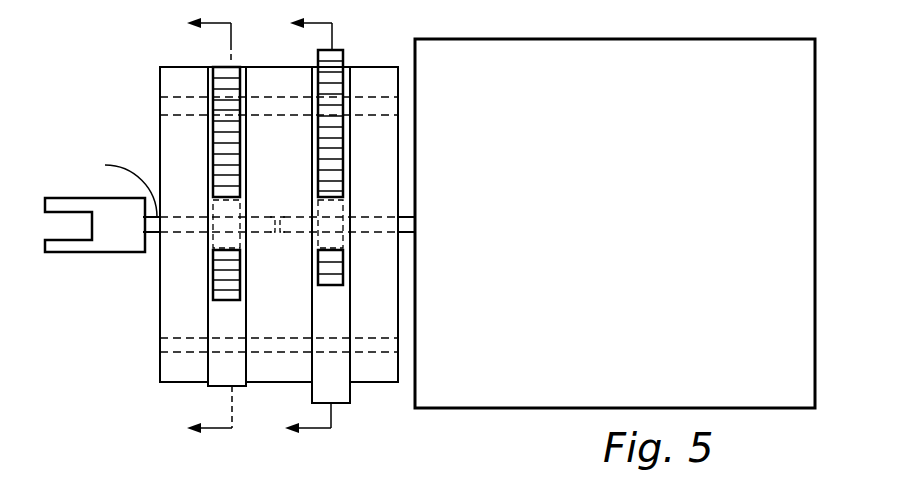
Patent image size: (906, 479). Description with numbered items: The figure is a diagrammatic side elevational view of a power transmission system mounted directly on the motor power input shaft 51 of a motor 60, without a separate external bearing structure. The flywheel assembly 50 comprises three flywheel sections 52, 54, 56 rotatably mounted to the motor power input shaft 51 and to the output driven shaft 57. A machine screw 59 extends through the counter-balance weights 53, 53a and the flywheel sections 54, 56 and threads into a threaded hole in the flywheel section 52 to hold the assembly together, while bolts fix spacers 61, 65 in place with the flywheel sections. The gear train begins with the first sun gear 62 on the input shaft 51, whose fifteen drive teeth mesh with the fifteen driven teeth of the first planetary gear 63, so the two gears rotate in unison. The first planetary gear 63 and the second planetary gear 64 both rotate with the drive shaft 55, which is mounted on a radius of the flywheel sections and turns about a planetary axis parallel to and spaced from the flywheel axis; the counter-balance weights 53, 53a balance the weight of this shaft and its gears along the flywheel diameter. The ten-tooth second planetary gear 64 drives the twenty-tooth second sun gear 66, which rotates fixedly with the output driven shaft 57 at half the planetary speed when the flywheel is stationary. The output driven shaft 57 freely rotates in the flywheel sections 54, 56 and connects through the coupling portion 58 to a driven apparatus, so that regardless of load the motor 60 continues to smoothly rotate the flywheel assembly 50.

The flywheel assembly 50 is at (372, 50).
The motor power input shaft 51 is at (405, 225).
The flywheel section 52 is at (387, 160).
The counter-balance weight 53 is at (340, 392).
The counter-balance weight 53a is at (235, 377).
The flywheel section 54 is at (300, 178).
The drive shaft 55 is at (170, 103).
The flywheel section 56 is at (172, 157).
The output driven shaft 57 is at (112, 184).
The coupling portion 58 is at (118, 247).
The machine screw 59 is at (175, 348).
The motor 60 is at (727, 53).
The spacer 61 is at (332, 238).
The first sun gear 62 is at (325, 267).
The first planetary gear 63 is at (338, 55).
The second planetary gear 64 is at (228, 75).
The spacer 65 is at (227, 223).
The second sun gear 66 is at (220, 273).